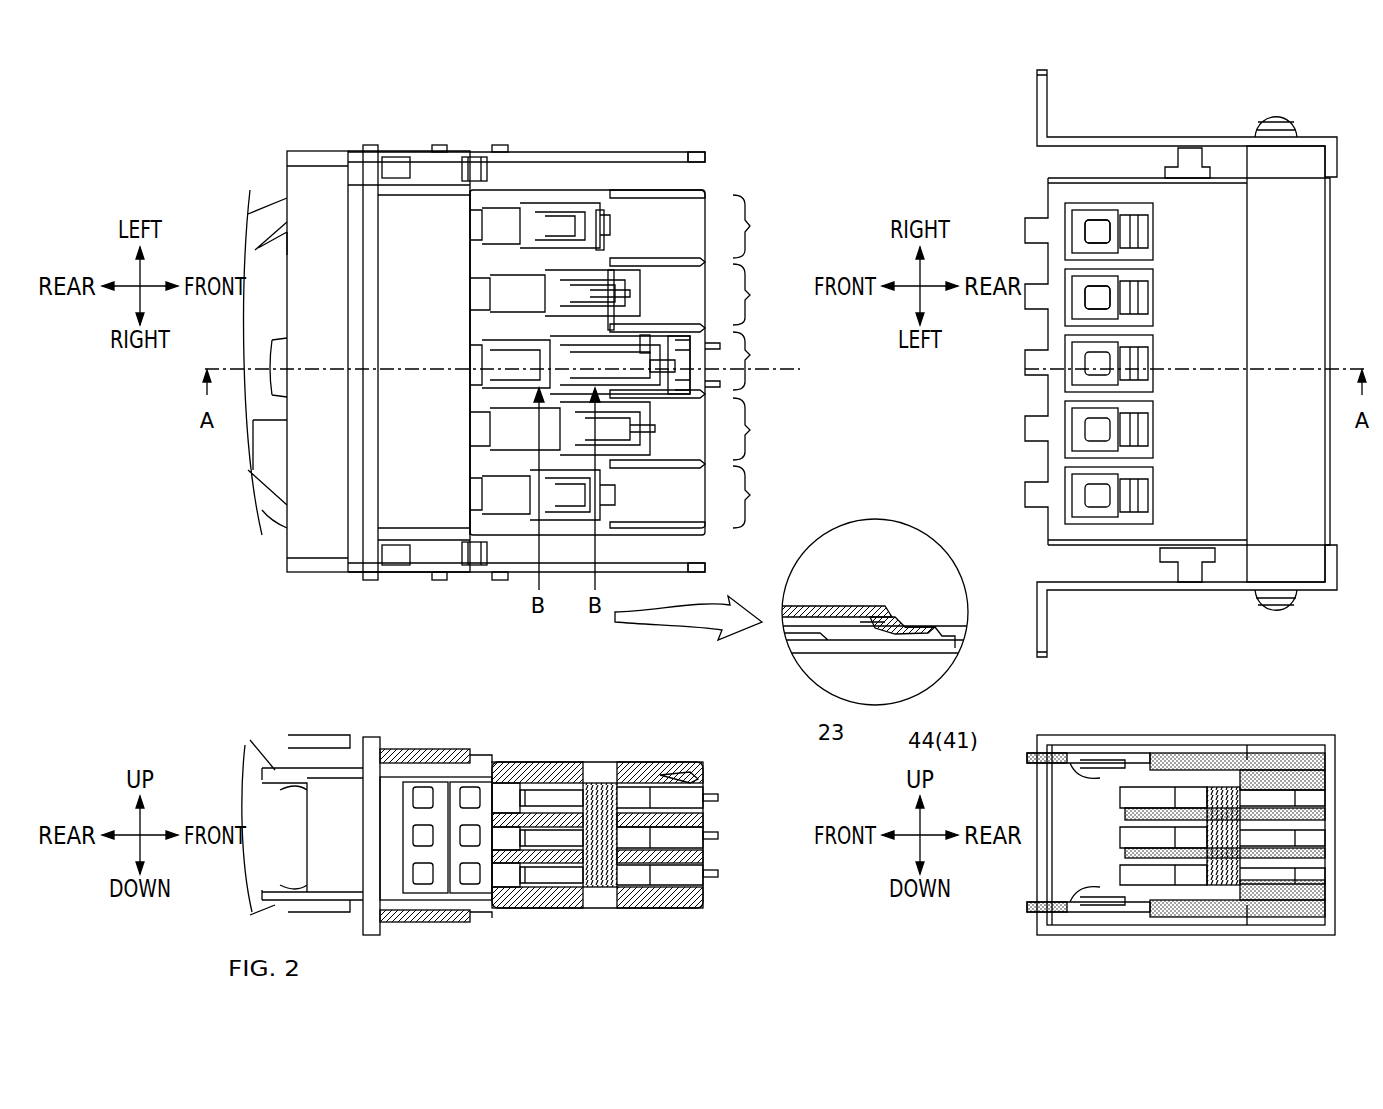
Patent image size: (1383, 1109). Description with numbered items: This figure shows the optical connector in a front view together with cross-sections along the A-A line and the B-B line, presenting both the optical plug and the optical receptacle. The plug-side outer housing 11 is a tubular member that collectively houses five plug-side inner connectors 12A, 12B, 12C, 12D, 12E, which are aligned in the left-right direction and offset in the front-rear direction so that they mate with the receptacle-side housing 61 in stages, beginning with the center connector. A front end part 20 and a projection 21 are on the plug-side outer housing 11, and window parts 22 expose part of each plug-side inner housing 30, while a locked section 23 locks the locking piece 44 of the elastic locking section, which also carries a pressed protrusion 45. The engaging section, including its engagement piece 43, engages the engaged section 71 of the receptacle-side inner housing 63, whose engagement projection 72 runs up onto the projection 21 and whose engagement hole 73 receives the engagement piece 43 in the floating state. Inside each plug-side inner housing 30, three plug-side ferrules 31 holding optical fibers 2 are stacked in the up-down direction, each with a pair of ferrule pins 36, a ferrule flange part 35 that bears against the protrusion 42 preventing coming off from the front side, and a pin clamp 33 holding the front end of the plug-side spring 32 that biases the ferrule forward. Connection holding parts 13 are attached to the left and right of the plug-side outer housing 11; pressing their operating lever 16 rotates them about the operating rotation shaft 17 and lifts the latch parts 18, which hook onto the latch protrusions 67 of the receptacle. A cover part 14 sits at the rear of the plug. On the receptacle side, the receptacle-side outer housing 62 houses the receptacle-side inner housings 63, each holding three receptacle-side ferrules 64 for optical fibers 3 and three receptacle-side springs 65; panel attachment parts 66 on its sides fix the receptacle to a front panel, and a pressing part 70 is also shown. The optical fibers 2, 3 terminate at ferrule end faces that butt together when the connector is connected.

The optical fiber 2 is at (540, 795).
The optical fiber 3 is at (1300, 770).
The plug-side outer housing 11 is at (420, 175).
The plug-side inner connector 12A is at (763, 361).
The plug-side inner connector 12B is at (763, 429).
The plug-side inner connector 12C is at (763, 294).
The plug-side inner connector 12D is at (764, 497).
The plug-side inner connector 12E is at (762, 226).
The connection holding part 13 is at (525, 152).
The cover part 14 is at (270, 540).
The operating lever 16 is at (316, 558).
The operating rotation shaft 17 is at (472, 165).
The latch part 18 is at (700, 152).
The front end part 20 is at (680, 350).
The projection 21 is at (647, 340).
The window part 22 is at (614, 318).
The locked section 23 is at (862, 622).
The plug-side inner housing 30 is at (613, 252).
The plug-side ferrule 31 is at (700, 812).
The plug-side spring 32 is at (550, 765).
The pin clamp 33 is at (632, 770).
The ferrule flange part 35 is at (640, 785).
The ferrule pin 36 is at (720, 797).
The protrusion for preventing coming off from the front side 42 is at (685, 797).
The engagement piece 43 is at (665, 395).
The locking piece 44 is at (890, 630).
The pressed protrusion 45 is at (600, 215).
The receptacle-side housing 61 is at (1190, 685).
The receptacle-side outer housing 62 is at (1215, 230).
The receptacle-side inner housing 63 is at (1112, 228).
The receptacle-side ferrule 64 is at (1172, 765).
The receptacle-side spring 65 is at (1275, 760).
The panel attachment part 66 is at (1038, 106).
The latch protrusion 67 is at (1188, 155).
The pressing part 70 is at (1022, 480).
The engaged section 71 is at (1085, 762).
The engagement projection 72 is at (1070, 760).
The engagement hole 73 is at (1098, 298).